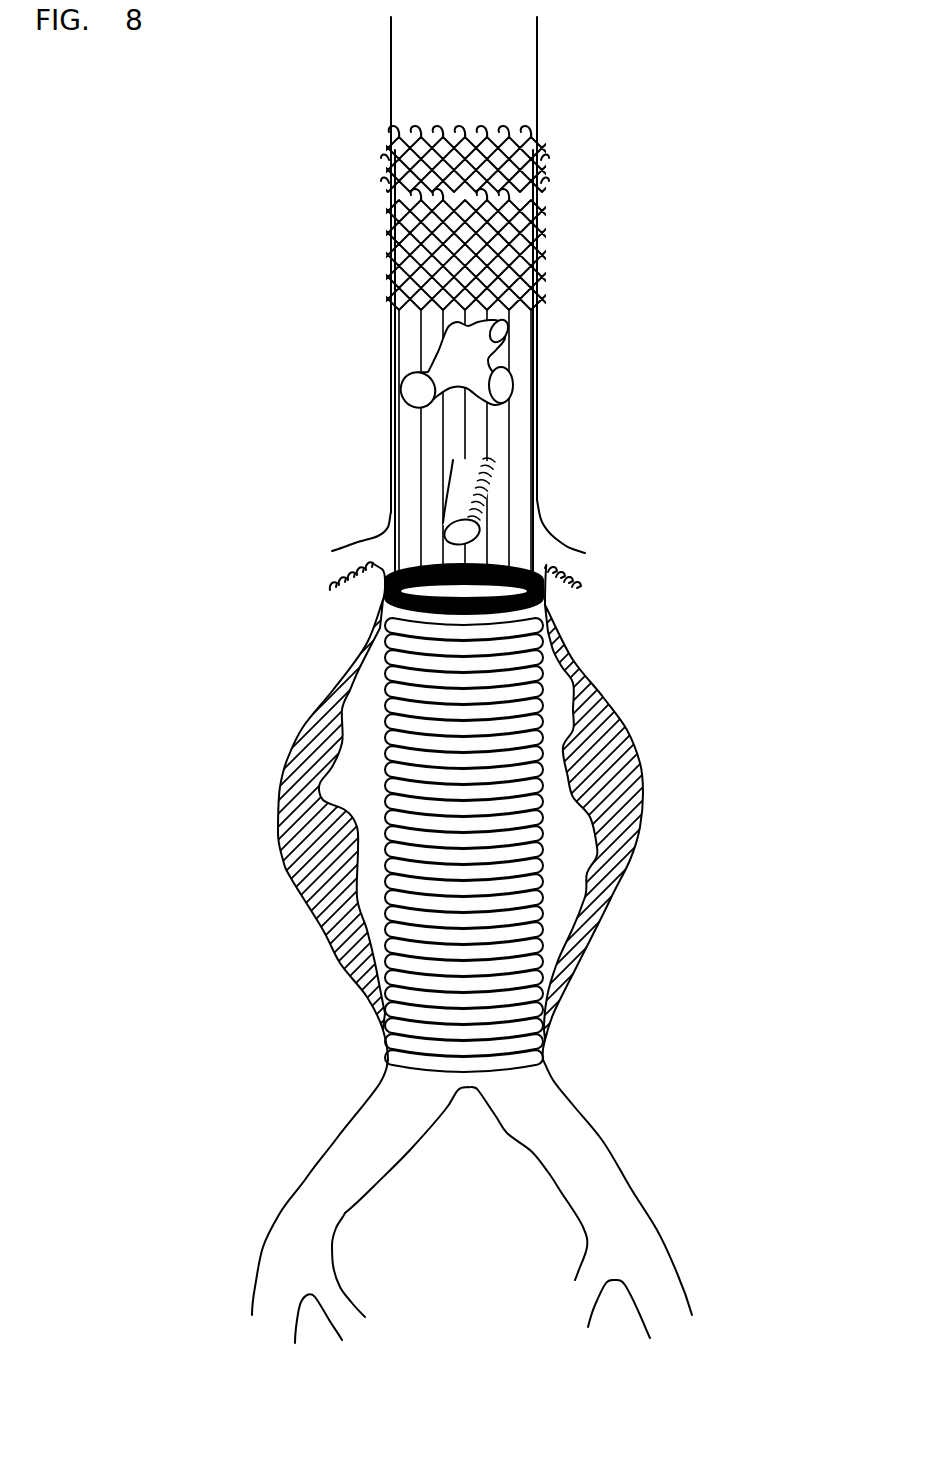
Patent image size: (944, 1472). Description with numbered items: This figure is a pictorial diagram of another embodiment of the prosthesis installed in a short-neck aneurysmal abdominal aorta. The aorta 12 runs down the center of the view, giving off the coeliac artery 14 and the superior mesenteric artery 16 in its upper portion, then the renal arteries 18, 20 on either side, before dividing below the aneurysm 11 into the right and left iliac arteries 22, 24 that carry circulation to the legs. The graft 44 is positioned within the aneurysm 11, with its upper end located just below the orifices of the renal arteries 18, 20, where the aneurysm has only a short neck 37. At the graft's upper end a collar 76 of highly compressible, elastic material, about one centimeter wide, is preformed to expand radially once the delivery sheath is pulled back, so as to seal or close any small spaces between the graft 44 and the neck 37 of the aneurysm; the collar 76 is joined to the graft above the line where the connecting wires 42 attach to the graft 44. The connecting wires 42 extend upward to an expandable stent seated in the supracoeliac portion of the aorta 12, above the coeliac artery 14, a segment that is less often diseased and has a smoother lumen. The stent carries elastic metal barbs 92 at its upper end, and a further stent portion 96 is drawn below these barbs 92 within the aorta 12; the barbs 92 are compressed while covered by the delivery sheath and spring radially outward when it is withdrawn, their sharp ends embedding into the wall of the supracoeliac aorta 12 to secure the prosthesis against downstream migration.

The aneurysm 11 is at (278, 782).
The aorta 12 is at (500, 567).
The coeliac artery 14 is at (473, 367).
The superior mesenteric artery 16 is at (487, 495).
The renal artery 18 is at (562, 560).
The renal artery 20 is at (345, 560).
The iliac artery 22 is at (573, 1105).
The iliac artery 24 is at (337, 1137).
The neck of the aneurysm 37 is at (378, 598).
The connecting wires 42 is at (505, 442).
The graft 44 is at (543, 863).
The collar 76 is at (460, 605).
The elastic metal barbs 92 is at (453, 133).
The lower stent 96 is at (513, 238).